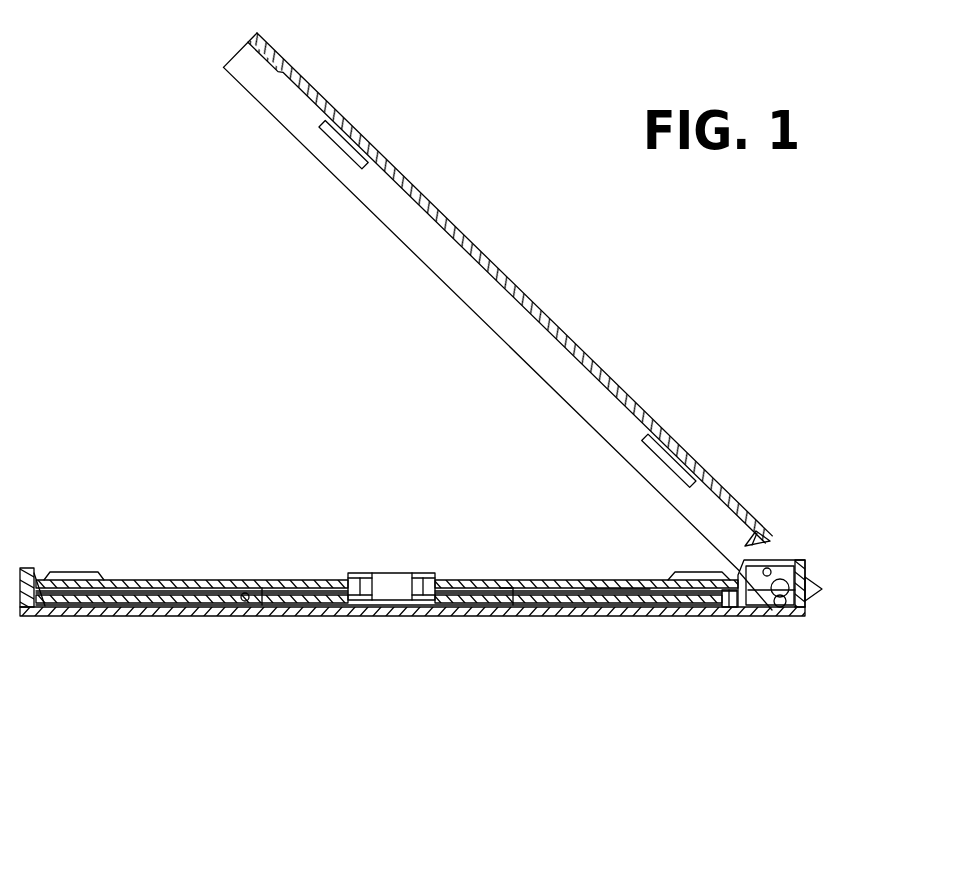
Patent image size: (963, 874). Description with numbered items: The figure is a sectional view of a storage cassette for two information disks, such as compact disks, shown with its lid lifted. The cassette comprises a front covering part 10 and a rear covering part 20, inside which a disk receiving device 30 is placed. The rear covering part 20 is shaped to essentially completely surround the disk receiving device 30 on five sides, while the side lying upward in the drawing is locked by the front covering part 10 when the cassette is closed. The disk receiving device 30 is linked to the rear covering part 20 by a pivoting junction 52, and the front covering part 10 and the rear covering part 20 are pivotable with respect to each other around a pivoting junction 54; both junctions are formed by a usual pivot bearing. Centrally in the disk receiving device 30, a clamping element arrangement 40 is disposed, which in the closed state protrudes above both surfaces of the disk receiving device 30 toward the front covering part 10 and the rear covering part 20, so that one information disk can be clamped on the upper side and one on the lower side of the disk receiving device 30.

The front covering part 10 is at (508, 265).
The rear covering part 20 is at (244, 628).
The disk receiving device 30 is at (190, 578).
The clamping element arrangement 40 is at (386, 566).
The pivoting junction 52 is at (783, 566).
The pivoting junction 54 is at (808, 592).